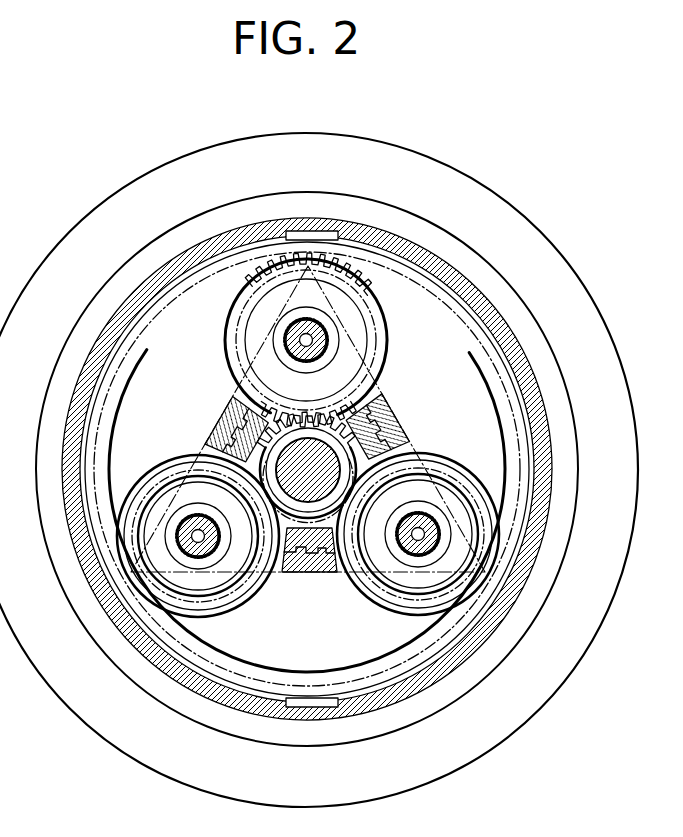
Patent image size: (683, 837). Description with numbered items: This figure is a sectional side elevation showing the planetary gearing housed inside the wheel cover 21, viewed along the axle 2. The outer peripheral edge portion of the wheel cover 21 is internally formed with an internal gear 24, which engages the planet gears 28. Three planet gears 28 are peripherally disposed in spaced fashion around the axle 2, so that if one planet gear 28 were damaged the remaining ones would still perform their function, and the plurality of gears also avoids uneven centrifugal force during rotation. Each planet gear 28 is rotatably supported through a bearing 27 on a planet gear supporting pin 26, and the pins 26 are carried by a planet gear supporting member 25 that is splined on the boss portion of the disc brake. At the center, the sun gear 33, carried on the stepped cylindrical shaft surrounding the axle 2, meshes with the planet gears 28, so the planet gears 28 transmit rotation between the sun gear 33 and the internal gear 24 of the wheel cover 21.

The axle 2 is at (342, 486).
The wheel cover 21 is at (282, 230).
The internal gear 24 is at (143, 348).
The planet gear supporting member 25 is at (232, 415).
The planet gear supporting pin 26 is at (333, 340).
The bearing 27 is at (318, 328).
The planet gear 28 is at (228, 333).
The sun gear 33 is at (308, 340).